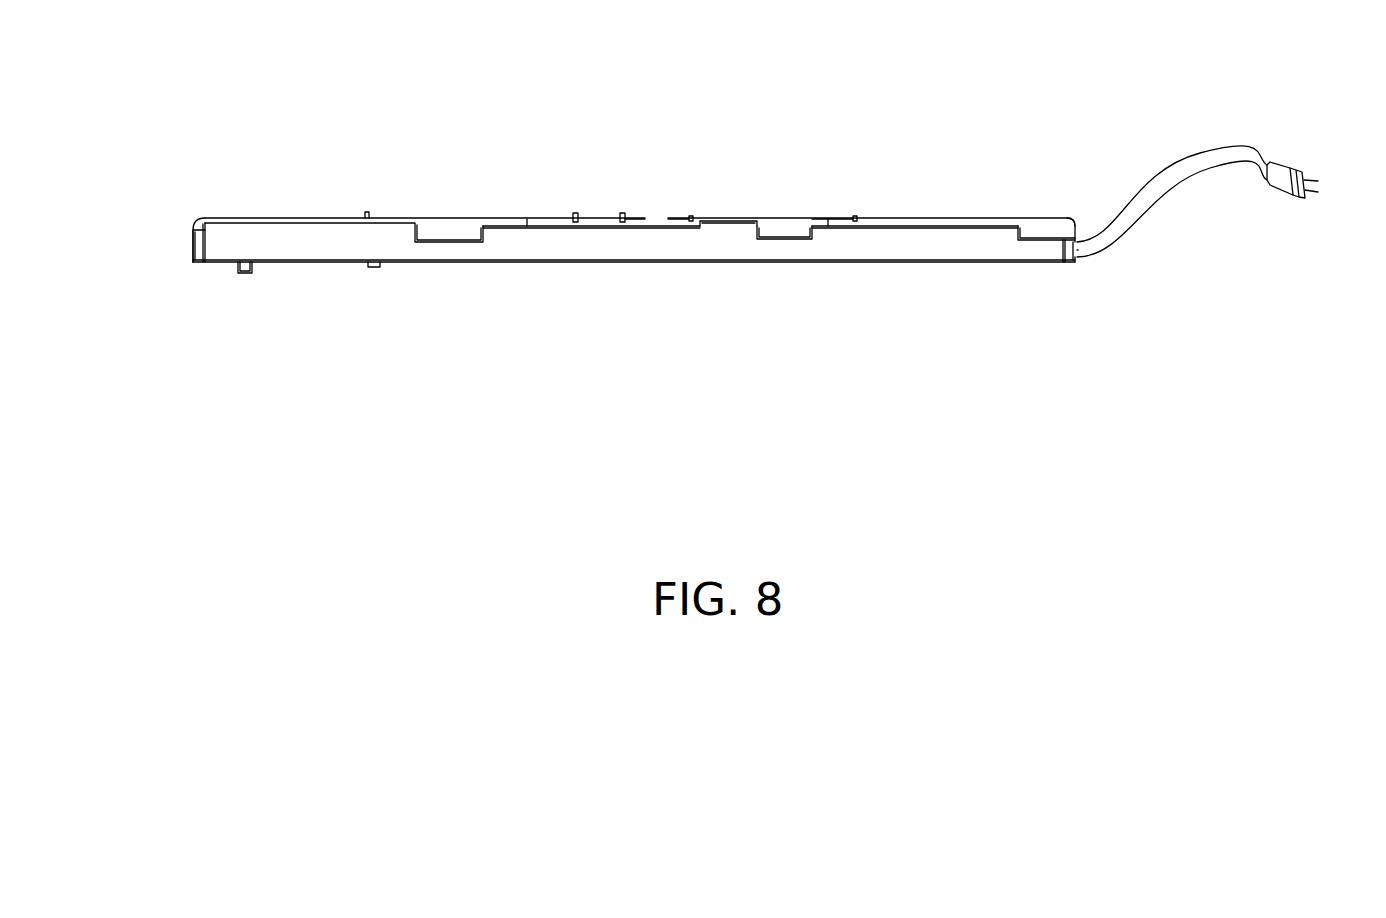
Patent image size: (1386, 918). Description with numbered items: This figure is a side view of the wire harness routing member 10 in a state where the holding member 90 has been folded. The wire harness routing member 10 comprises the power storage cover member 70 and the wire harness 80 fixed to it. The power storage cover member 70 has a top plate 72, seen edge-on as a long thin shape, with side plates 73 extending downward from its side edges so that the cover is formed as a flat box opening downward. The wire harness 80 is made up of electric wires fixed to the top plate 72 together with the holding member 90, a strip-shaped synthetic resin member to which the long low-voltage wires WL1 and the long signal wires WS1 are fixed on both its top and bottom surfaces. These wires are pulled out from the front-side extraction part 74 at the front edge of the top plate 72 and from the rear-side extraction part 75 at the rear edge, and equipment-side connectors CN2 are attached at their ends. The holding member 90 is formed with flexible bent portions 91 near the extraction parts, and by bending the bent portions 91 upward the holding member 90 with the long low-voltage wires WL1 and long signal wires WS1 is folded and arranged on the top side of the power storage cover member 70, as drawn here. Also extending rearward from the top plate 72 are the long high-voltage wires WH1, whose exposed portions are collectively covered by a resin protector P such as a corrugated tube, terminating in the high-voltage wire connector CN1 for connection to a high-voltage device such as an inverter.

The wire harness routing member 10 is at (536, 142).
The power storage cover member 70 is at (680, 248).
The top plate 72 is at (652, 218).
The side plate 73 is at (946, 250).
The front-side extraction part 74 is at (184, 255).
The rear-side extraction part 75 is at (1084, 268).
The wire harness 80 is at (433, 208).
The holding member 90 is at (238, 218).
The bent portion 91 is at (190, 219).
The equipment-side connector CN2 is at (622, 214).
The long low-voltage wire WL1 is at (475, 218).
The long signal wire WS1 is at (527, 219).
The long high-voltage wire WH1 is at (1177, 145).
The resin protector P is at (1143, 215).
The high-voltage wire connector CN1 is at (1292, 172).